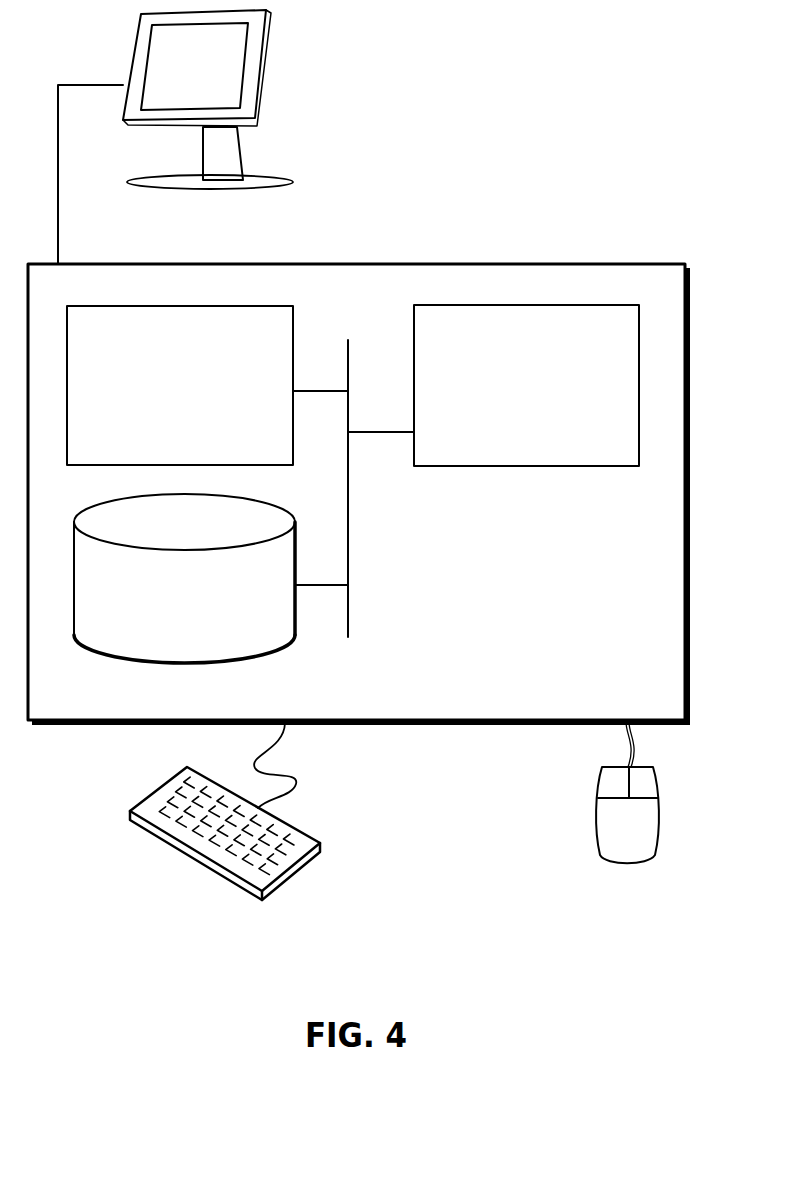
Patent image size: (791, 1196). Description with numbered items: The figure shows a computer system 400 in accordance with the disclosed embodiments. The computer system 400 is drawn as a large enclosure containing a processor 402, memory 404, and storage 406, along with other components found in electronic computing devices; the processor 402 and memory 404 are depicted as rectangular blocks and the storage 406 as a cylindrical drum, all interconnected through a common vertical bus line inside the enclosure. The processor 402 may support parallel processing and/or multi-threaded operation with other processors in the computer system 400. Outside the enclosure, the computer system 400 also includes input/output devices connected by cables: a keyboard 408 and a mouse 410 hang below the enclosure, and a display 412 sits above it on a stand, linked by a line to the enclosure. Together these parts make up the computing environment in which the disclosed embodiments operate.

The computer system 400 is at (403, 244).
The processor 402 is at (510, 397).
The memory 404 is at (160, 397).
The storage 406 is at (167, 608).
The keyboard 408 is at (150, 830).
The mouse 410 is at (608, 839).
The display 412 is at (175, 137).